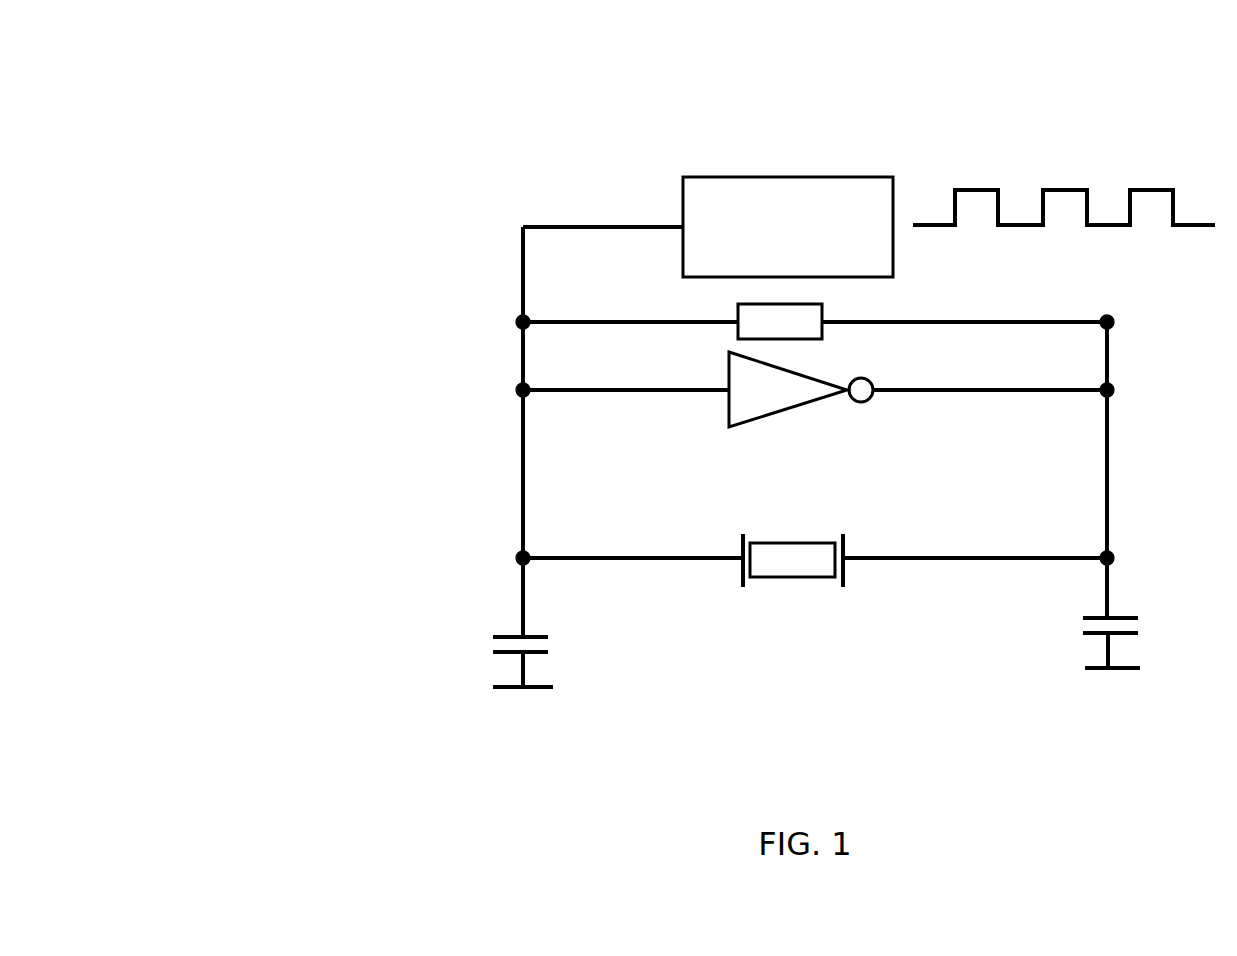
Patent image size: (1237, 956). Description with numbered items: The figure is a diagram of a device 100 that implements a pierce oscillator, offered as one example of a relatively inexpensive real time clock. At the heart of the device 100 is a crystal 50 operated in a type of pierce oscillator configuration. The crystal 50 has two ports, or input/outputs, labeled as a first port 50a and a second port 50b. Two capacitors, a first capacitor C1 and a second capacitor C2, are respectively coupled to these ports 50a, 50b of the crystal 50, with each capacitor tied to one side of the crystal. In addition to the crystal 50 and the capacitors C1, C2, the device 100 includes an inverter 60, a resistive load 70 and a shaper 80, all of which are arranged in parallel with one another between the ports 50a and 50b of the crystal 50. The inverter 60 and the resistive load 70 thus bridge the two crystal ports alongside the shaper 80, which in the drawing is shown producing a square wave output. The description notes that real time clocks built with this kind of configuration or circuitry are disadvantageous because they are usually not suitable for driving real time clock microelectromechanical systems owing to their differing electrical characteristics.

The device 100 is at (647, 340).
The shaper 80 is at (869, 227).
The resistive load 70 is at (815, 321).
The inverter 60 is at (815, 389).
The crystal 50 is at (815, 571).
The port of the crystal 50a is at (518, 558).
The port of the crystal 50b is at (1112, 556).
The capacitor C1 is at (540, 657).
The capacitor C2 is at (1089, 639).